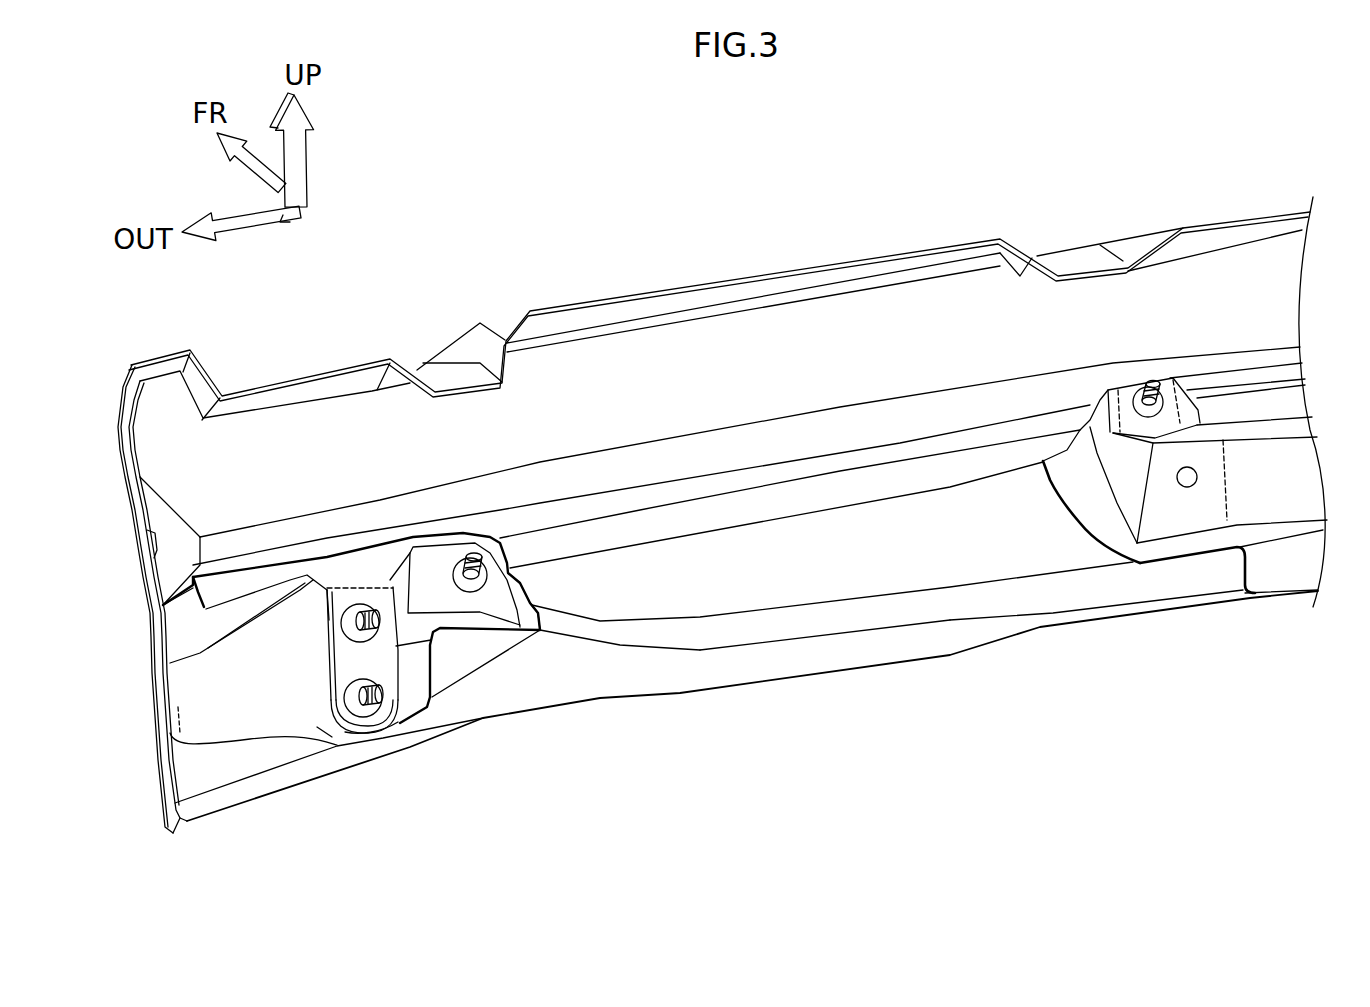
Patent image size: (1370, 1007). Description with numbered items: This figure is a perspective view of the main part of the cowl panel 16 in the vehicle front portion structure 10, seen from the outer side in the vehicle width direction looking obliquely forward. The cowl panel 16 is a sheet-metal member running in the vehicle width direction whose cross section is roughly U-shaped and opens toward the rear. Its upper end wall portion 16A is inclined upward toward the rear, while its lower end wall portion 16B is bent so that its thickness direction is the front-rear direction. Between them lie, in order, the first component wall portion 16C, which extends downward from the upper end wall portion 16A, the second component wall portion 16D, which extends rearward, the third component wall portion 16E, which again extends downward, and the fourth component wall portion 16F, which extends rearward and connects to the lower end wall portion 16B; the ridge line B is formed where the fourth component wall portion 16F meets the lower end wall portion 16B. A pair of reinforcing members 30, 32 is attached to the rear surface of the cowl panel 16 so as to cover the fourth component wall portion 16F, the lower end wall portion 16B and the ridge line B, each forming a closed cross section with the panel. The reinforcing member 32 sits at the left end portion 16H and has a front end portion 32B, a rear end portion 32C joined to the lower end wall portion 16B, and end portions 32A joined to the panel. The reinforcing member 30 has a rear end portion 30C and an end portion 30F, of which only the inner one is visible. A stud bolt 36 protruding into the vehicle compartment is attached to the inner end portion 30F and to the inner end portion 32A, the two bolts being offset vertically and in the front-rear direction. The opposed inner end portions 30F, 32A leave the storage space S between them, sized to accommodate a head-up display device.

The vehicle front portion structure 10 is at (1213, 141).
The cowl panel 16 is at (963, 238).
The upper end wall portion 16A is at (733, 294).
The lower end wall portion 16B is at (667, 686).
The first component wall portion 16C is at (742, 366).
The second component wall portion 16D is at (800, 432).
The third component wall portion 16E is at (847, 462).
The fourth component wall portion 16F is at (812, 553).
The end portion on the left side in the vehicle width direction 16H is at (157, 557).
The reinforcing member 30 is at (1300, 487).
The rear end portion 30C is at (1282, 582).
The end portion in the vehicle width direction 30F is at (1083, 497).
The reinforcing member 32 is at (331, 740).
The end portion 32A is at (515, 580).
The front end portion 32B is at (330, 557).
The rear end portion 32C is at (383, 737).
The stud bolt 36 is at (472, 555).
The storage space S is at (759, 573).
The ridge line B is at (820, 627).